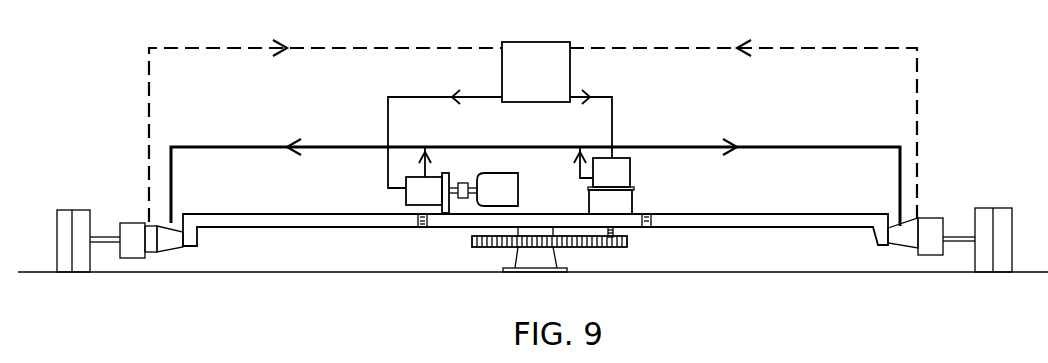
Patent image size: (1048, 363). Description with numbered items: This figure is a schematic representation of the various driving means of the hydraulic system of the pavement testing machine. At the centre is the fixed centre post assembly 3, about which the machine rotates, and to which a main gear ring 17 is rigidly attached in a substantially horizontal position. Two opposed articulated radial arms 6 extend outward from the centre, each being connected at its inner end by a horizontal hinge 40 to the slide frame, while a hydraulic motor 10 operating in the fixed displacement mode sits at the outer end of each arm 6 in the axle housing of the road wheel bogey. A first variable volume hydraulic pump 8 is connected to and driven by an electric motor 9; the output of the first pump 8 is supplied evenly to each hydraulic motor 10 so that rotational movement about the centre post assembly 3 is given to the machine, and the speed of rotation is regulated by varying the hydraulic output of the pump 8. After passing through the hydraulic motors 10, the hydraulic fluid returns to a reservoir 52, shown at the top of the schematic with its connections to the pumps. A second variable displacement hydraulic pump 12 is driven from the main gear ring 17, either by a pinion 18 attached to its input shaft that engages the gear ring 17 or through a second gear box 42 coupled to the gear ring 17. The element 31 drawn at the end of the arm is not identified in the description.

The centre post assembly 3 is at (547, 257).
The articulated radial arm 6 is at (258, 214).
The first variable volume hydraulic pump 8 is at (420, 193).
The electric motor 9 is at (498, 192).
The hydraulic motor 10 is at (170, 240).
The second variable displacement hydraulic pump 12 is at (620, 176).
The main gear ring 17 is at (493, 247).
The pinion 18 is at (628, 243).
The end block 31 is at (82, 212).
The horizontal hinge 40 is at (650, 222).
The second gear box 42 is at (623, 202).
The reservoir 52 is at (536, 72).